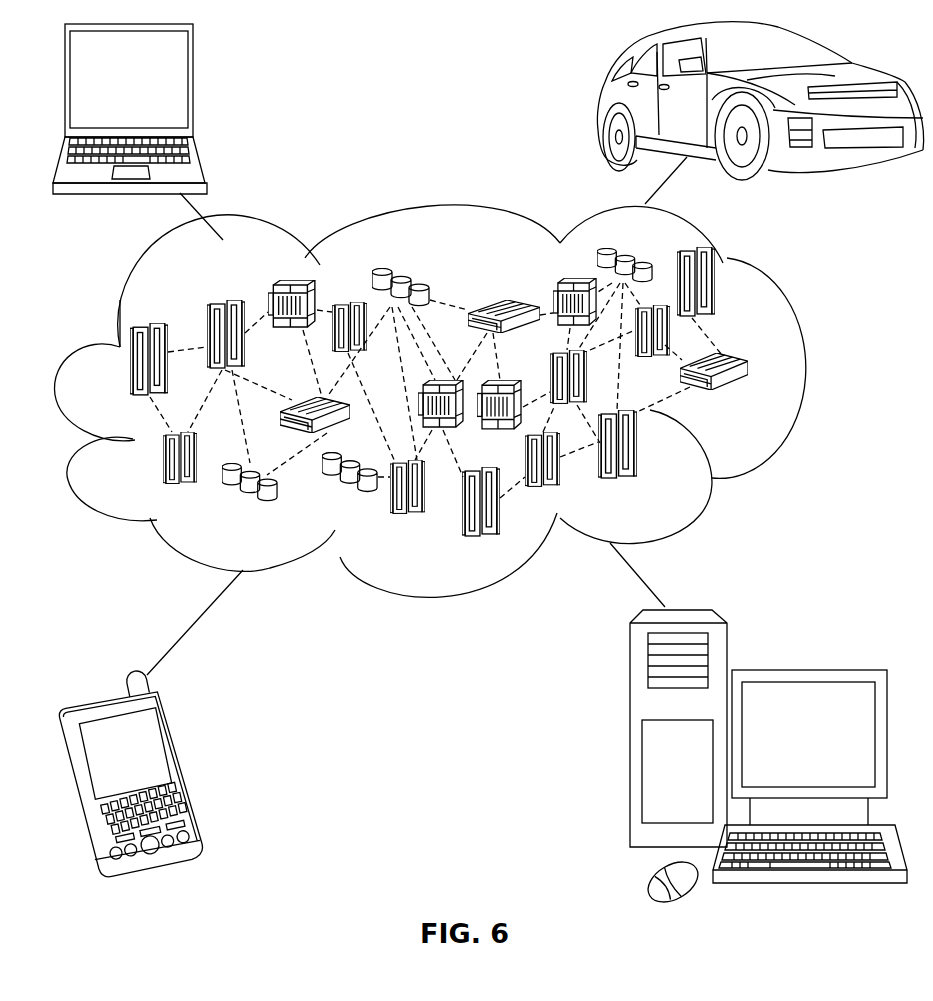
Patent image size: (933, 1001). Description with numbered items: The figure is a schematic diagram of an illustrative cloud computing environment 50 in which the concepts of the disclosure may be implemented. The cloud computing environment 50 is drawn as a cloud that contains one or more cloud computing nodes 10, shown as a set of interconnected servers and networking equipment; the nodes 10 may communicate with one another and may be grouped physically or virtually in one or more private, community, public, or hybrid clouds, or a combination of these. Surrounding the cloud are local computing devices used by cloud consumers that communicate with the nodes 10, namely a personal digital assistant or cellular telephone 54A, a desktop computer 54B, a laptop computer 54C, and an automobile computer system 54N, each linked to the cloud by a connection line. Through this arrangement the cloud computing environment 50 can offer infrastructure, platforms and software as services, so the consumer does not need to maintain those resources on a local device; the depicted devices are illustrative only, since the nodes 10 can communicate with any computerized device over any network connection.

The cloud computing nodes 10 is at (752, 406).
The cloud computing environment 50 is at (458, 401).
The personal digital assistant (PDA) or cellular telephone 54A is at (183, 768).
The desktop computer 54B is at (806, 670).
The laptop computer 54C is at (194, 87).
The automobile computer system 54N is at (604, 105).